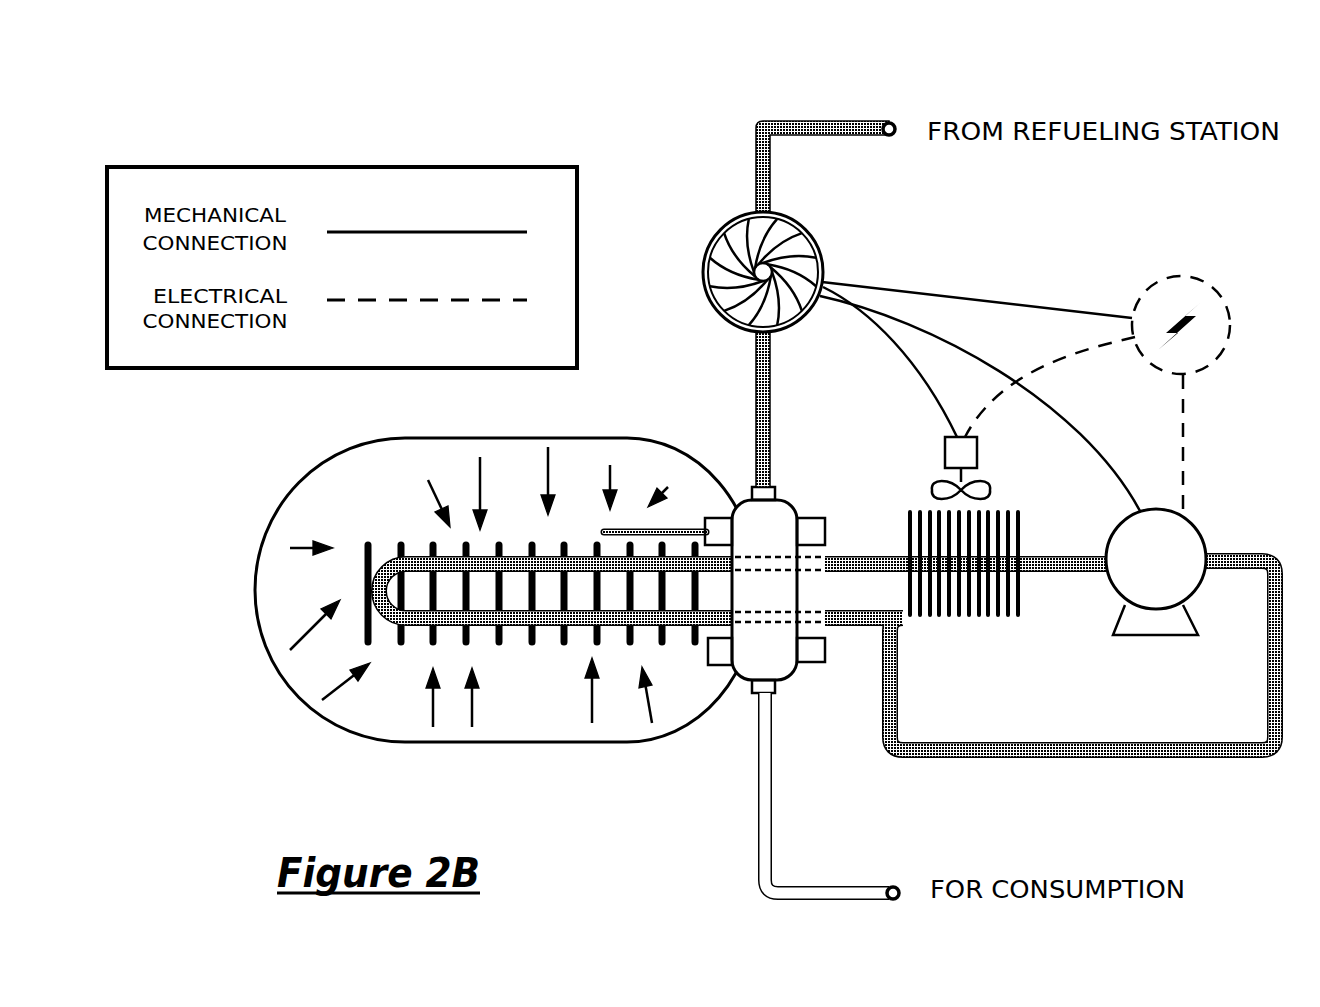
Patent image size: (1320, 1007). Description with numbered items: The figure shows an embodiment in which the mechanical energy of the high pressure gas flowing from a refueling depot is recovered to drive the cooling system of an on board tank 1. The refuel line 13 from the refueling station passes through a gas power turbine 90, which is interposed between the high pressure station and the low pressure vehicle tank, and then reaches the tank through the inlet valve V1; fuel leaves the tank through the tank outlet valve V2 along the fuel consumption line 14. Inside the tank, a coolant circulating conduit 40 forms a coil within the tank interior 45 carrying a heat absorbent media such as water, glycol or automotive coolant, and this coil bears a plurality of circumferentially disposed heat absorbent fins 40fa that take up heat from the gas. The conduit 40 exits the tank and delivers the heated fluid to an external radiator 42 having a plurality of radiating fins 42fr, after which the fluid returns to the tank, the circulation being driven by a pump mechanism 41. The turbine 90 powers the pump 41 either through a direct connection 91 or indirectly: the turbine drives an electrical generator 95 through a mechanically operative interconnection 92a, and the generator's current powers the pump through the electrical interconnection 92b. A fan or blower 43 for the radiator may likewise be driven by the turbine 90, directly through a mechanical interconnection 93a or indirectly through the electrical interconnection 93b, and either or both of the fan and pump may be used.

The on board tank 1 is at (263, 648).
The refuel line 13 is at (828, 121).
The fuel consumption line 14 is at (758, 803).
The coolant circulating conduit 40 is at (898, 690).
The heat absorbent fins 40fa is at (401, 547).
The pump mechanism 41 is at (1156, 636).
The radiator 42 is at (974, 606).
The radiating fins 42fr is at (1015, 616).
The fan or blower 43 is at (945, 450).
The coil within the tank interior 45 is at (513, 628).
The gas power turbine 90 is at (703, 283).
The direct connection 91 is at (1126, 497).
The mechanically operative interconnection 92a is at (1000, 301).
The electrical interconnection 92b is at (1186, 440).
The mechanical interconnection 93a is at (897, 362).
The electrical interconnection 93b is at (1060, 358).
The electrical generator 95 is at (1232, 325).
The inlet valve V1 is at (811, 518).
The tank outlet valve V2 is at (811, 665).